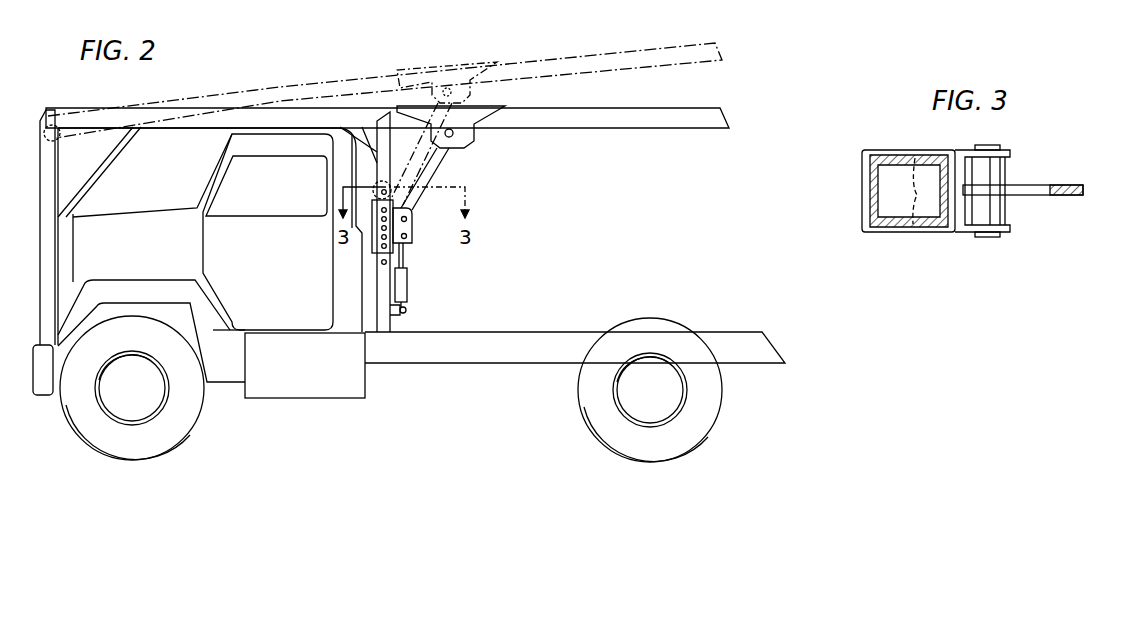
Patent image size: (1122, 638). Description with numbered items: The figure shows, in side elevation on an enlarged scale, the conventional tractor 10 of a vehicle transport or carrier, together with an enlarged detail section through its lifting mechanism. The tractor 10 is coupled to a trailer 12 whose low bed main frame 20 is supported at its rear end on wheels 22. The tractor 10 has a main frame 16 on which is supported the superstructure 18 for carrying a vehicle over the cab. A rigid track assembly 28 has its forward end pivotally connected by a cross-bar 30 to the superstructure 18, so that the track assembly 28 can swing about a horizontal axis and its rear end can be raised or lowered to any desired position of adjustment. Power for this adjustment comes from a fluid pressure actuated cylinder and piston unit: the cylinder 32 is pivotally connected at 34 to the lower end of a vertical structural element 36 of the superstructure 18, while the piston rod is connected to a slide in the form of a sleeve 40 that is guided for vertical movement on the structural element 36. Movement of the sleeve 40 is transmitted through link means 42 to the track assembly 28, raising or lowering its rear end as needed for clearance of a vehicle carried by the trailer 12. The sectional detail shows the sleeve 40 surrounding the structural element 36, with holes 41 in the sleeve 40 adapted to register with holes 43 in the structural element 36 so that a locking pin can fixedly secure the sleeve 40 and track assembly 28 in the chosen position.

In FIG. 2, the tractor 10 is at (282, 416).
In FIG. 2, the trailer 12 is at (587, 0).
In FIG. 2, the main frame 16 is at (509, 340).
In FIG. 2, the superstructure 18 is at (43, 161).
In FIG. 2, the main frame 20 is at (655, 0).
In FIG. 2, the wheels 22 is at (1060, 4).
In FIG. 2, the track assembly 28 is at (648, 120).
In FIG. 2, the cross-bar 30 is at (58, 111).
In FIG. 2, the cylinder 32 is at (408, 285).
In FIG. 2, the pivotal connection 34 is at (408, 311).
In FIG. 2, the vertical structural element 36 is at (380, 295).
In FIG. 3, the vertical structural element 36 is at (930, 233).
In FIG. 2, the sleeve 40 is at (398, 223).
In FIG. 3, the sleeve 40 is at (873, 233).
In FIG. 3, the holes 41 is at (910, 233).
In FIG. 2, the link means 42 is at (437, 164).
In FIG. 3, the link means 42 is at (1056, 196).
In FIG. 3, the holes 43 is at (909, 197).